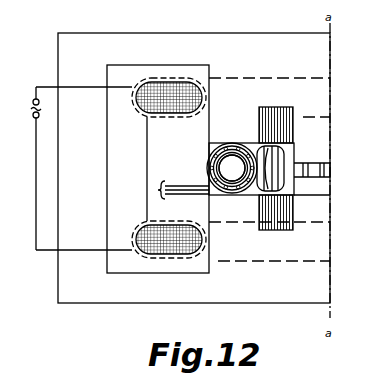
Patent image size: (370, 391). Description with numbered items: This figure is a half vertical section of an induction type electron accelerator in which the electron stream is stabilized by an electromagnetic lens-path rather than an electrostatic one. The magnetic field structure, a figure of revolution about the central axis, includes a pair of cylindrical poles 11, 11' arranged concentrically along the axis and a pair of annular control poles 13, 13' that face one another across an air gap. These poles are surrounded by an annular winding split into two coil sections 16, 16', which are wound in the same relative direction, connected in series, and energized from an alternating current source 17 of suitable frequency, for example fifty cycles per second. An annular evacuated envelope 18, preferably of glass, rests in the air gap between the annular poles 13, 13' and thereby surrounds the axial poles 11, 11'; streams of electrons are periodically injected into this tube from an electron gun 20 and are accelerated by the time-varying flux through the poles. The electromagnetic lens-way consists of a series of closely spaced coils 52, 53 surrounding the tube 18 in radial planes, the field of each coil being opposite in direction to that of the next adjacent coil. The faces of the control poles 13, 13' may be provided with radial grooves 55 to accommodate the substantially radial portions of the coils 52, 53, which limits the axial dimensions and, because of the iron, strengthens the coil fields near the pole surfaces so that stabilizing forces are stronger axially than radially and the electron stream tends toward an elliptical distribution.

The cylindrical pole 11 is at (235, 169).
The cylindrical pole 11' is at (329, 211).
The annular pole 13 is at (235, 159).
The annular pole 13' is at (183, 198).
The coil section 16 is at (162, 111).
The coil section 16' is at (162, 227).
The alternating current source 17 is at (33, 118).
The annular evacuated envelope 18 is at (213, 159).
The electron gun 20 is at (231, 168).
The coil 52 is at (268, 178).
The coil 53 is at (252, 143).
The radial groove 55 is at (229, 143).